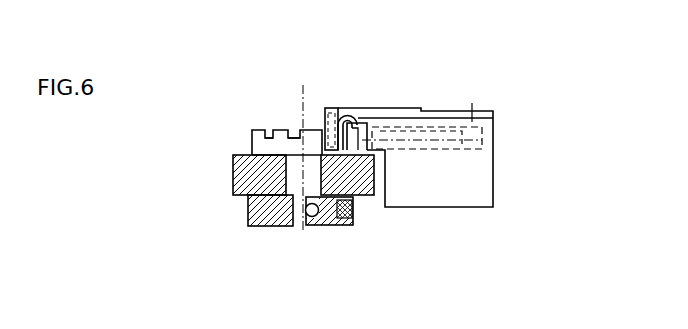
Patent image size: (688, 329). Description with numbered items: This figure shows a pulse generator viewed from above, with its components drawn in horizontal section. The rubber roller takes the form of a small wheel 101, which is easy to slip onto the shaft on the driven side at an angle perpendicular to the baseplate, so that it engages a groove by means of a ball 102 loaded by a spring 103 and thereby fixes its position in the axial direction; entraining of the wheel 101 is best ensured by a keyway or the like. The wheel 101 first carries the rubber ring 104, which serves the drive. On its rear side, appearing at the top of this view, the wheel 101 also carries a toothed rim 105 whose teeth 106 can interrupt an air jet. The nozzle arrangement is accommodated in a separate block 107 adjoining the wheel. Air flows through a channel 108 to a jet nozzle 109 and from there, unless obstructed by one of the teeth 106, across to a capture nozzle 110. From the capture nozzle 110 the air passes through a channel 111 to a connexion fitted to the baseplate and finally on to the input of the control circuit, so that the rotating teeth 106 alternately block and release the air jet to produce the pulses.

The wheel 101 is at (240, 207).
The ball 102 is at (305, 225).
The spring 103 is at (333, 225).
The rubber ring 104 is at (245, 176).
The toothed rim 105 is at (250, 125).
The teeth 106 is at (316, 134).
The block 107 is at (478, 177).
The channel 108 is at (458, 140).
The jet nozzle 109 is at (370, 136).
The capture nozzle 110 is at (345, 127).
The channel 111 is at (332, 106).